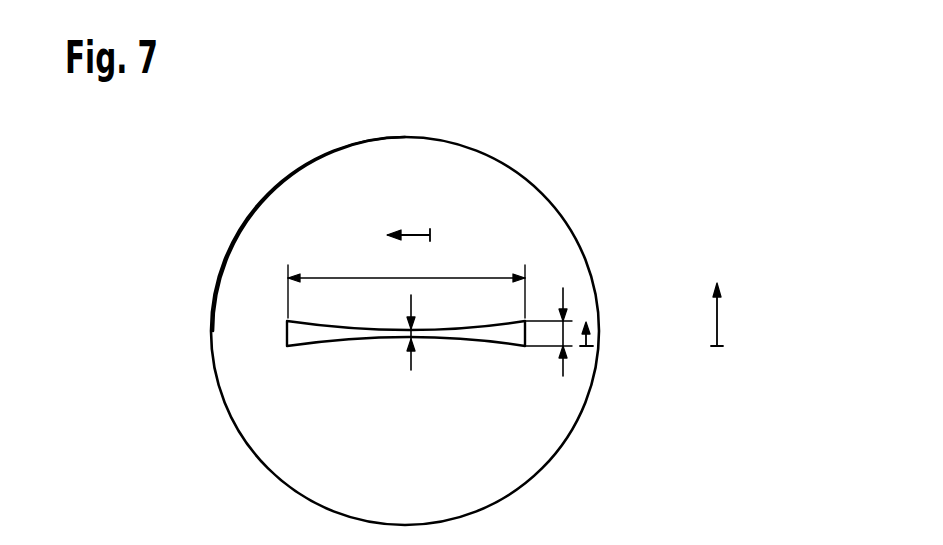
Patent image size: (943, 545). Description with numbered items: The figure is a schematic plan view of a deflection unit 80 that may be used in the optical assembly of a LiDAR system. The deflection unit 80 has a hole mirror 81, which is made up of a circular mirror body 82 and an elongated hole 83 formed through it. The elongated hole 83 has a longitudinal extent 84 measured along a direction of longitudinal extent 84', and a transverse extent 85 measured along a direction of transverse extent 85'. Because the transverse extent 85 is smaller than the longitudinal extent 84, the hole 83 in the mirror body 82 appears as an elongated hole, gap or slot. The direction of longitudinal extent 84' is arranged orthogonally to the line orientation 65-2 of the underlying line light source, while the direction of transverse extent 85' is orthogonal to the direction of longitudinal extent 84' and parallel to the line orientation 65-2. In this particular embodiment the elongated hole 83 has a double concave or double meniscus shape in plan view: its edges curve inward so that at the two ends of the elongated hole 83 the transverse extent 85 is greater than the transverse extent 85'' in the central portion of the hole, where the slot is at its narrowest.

The deflection unit 80 is at (475, 331).
The hole mirror 81 is at (612, 185).
The mirror body 82 is at (277, 218).
The elongated hole 83 is at (308, 340).
The longitudinal extent 84 is at (406, 263).
The direction of longitudinal extent 84' is at (412, 202).
The transverse extent 85 is at (597, 320).
The direction of transverse extent 85' is at (626, 335).
The transverse extent in central portion 85'' is at (465, 352).
The line orientation 65-2 is at (720, 318).